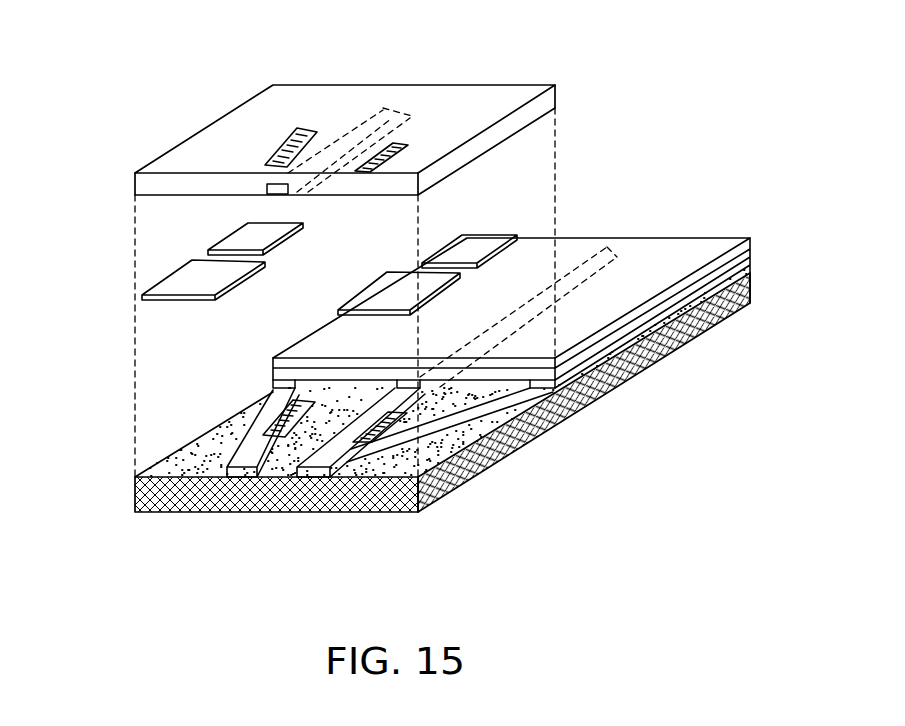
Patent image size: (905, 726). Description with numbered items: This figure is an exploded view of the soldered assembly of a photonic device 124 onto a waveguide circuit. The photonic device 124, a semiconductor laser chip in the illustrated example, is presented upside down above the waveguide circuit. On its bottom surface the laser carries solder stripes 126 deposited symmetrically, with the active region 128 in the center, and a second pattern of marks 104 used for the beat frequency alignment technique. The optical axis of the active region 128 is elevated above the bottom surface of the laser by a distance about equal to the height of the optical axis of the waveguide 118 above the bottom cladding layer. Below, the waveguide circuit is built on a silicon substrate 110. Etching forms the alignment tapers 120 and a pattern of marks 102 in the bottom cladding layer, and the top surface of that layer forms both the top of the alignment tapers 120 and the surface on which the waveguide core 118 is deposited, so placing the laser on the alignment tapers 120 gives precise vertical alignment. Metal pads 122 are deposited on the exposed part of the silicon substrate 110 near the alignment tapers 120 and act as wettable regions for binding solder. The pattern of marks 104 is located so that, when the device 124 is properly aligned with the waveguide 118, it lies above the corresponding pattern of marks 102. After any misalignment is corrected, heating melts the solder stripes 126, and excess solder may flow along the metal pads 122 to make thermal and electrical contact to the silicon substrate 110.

The pattern of marks 102 is at (272, 420).
The second pattern of marks 104 is at (283, 143).
The silicon substrate 110 is at (650, 347).
The waveguide core 118 is at (608, 240).
The alignment tapers 120 is at (240, 482).
The metal pads 122 is at (488, 414).
The photonic device 124 is at (192, 150).
The solder stripes 126 is at (158, 285).
The active region 128 is at (365, 118).